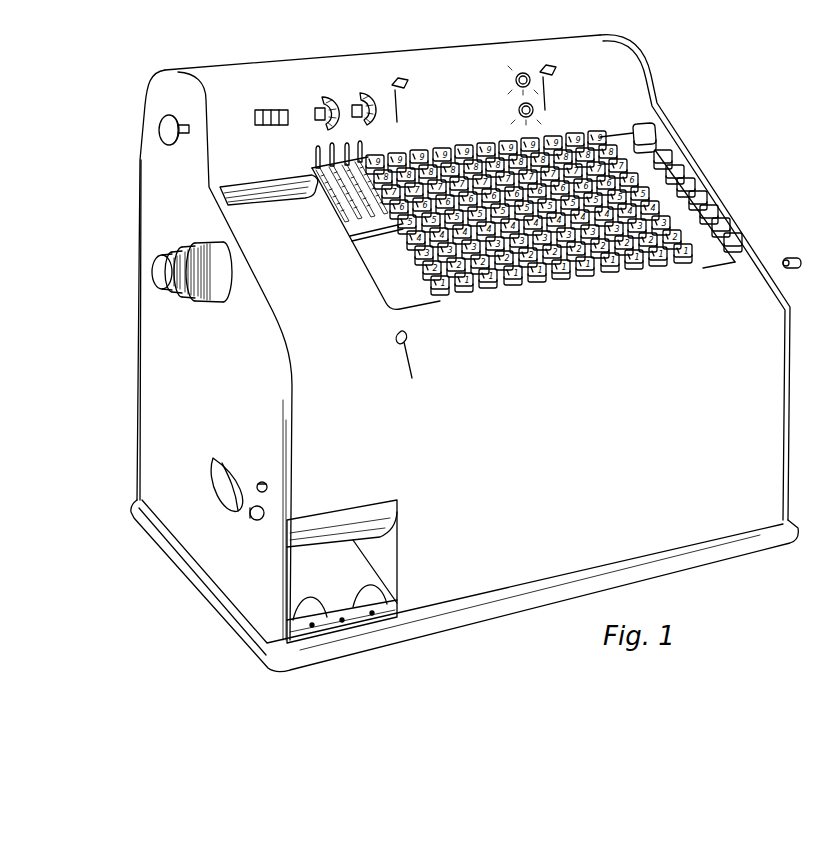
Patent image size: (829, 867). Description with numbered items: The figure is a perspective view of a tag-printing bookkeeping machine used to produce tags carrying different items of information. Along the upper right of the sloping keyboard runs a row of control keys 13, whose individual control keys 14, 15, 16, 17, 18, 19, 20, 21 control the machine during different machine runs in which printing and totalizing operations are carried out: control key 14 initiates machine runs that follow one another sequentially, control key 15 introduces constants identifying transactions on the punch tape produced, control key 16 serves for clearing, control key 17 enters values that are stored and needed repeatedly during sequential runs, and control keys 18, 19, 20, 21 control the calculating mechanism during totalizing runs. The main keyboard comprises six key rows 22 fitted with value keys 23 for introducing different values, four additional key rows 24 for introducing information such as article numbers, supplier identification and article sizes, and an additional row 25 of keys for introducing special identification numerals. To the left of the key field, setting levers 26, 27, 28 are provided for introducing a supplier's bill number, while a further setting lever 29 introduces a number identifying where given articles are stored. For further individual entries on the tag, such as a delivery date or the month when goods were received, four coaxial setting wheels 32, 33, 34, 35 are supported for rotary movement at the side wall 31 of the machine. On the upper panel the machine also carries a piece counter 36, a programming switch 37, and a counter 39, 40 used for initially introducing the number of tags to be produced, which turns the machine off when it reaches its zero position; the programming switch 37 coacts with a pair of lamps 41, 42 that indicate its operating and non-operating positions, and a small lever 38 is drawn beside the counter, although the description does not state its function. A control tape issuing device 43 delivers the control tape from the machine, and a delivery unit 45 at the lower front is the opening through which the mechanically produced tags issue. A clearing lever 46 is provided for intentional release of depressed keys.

The row of control keys 13 is at (733, 260).
The control key 14 is at (658, 132).
The control key 15 is at (676, 154).
The control key 16 is at (688, 170).
The control key 17 is at (699, 184).
The control key 18 is at (711, 198).
The control key 19 is at (722, 213).
The control key 20 is at (734, 226).
The control key 21 is at (746, 242).
The key rows 22 is at (703, 268).
The value keys 23 is at (633, 133).
The additional key rows 24 is at (550, 288).
The additional row of keys 25 is at (445, 144).
The setting lever 26 is at (316, 158).
The setting lever 27 is at (330, 150).
The setting lever 28 is at (347, 143).
The setting lever 29 is at (363, 147).
The side wall 31 is at (150, 392).
The setting wheel 32 is at (212, 245).
The setting wheel 33 is at (190, 248).
The setting wheel 34 is at (180, 294).
The setting wheel 35 is at (152, 276).
The piece counter 36 is at (268, 108).
The programming switch 37 is at (557, 70).
The lever 38 is at (406, 84).
The counter 39 is at (362, 93).
The counter 40 is at (325, 98).
The lamp 41 is at (522, 72).
The lamp 42 is at (534, 109).
The control tape issuing device 43 is at (250, 185).
The delivery unit 45 is at (337, 590).
The clearing lever 46 is at (797, 270).